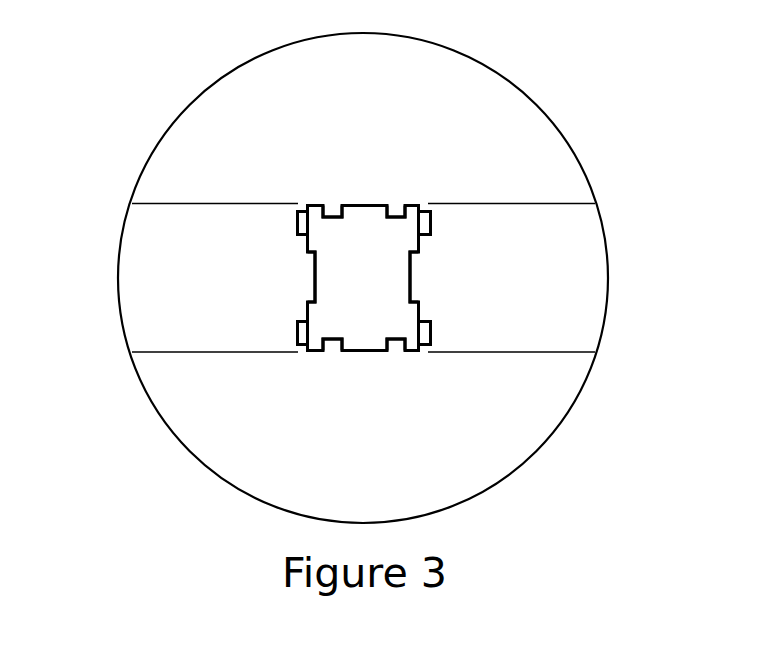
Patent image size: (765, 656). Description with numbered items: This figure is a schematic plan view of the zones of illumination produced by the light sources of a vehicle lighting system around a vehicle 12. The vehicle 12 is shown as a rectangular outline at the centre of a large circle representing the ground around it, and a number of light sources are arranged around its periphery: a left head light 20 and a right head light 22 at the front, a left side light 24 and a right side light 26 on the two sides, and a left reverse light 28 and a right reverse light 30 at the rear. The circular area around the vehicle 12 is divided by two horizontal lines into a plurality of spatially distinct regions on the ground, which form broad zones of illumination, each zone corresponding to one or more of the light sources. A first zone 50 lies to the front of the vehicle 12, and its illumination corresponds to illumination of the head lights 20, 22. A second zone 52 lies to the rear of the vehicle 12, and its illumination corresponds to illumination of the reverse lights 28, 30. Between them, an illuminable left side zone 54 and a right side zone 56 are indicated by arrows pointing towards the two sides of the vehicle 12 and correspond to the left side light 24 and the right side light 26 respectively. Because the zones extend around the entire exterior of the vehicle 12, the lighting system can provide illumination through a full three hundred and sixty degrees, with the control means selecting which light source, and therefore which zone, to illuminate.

The vehicle 12 is at (417, 178).
The left head light 20 is at (335, 210).
The right head light 22 is at (395, 210).
The left side light 24 is at (312, 277).
The right side light 26 is at (413, 277).
The left reverse light 28 is at (330, 345).
The right reverse light 30 is at (395, 345).
The first zone 50 is at (400, 83).
The second zone 52 is at (444, 470).
The left side zone 54 is at (164, 296).
The right side zone 56 is at (564, 296).